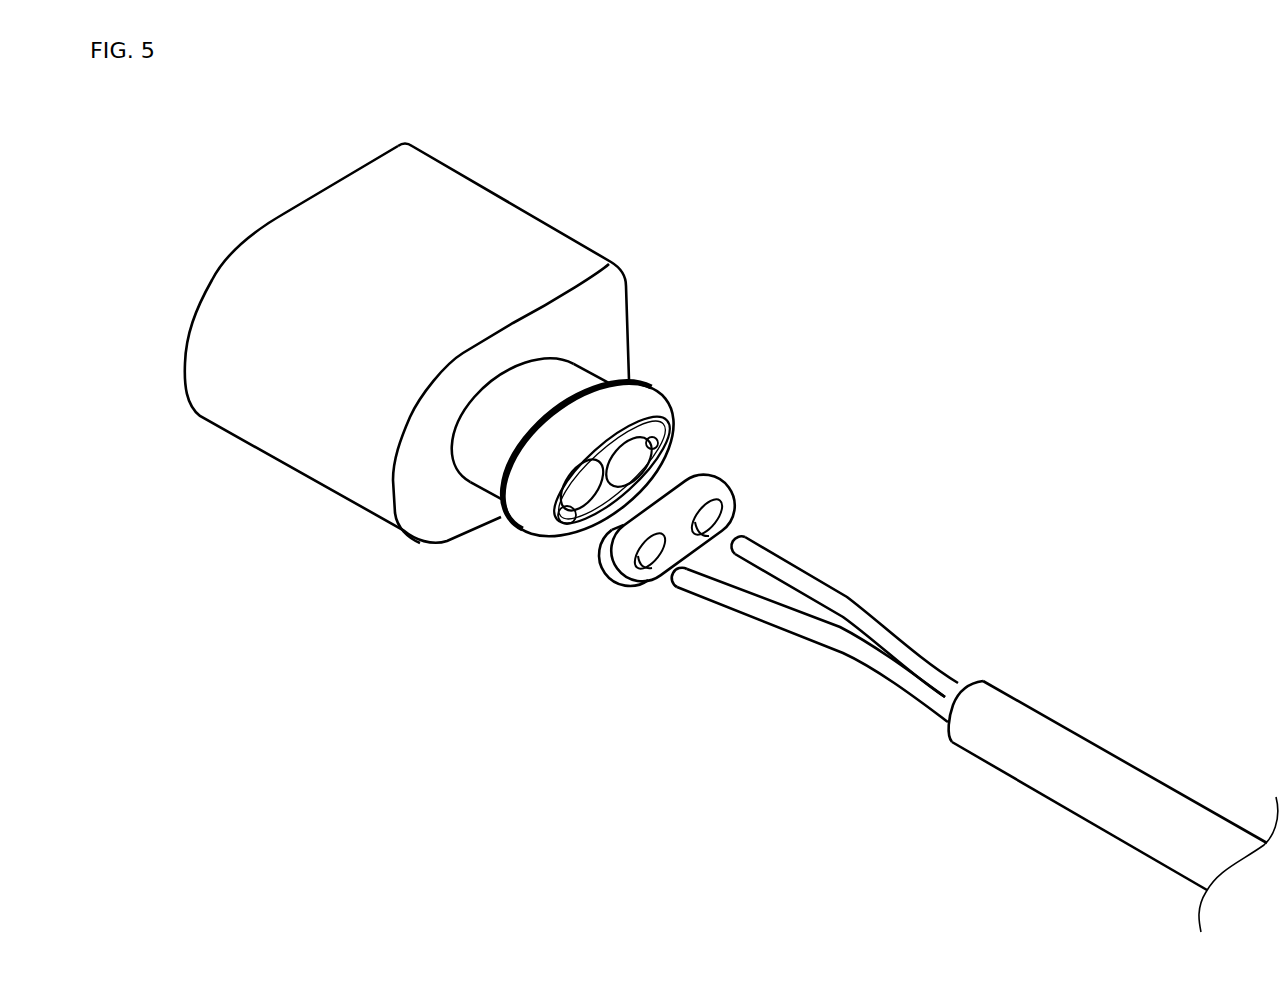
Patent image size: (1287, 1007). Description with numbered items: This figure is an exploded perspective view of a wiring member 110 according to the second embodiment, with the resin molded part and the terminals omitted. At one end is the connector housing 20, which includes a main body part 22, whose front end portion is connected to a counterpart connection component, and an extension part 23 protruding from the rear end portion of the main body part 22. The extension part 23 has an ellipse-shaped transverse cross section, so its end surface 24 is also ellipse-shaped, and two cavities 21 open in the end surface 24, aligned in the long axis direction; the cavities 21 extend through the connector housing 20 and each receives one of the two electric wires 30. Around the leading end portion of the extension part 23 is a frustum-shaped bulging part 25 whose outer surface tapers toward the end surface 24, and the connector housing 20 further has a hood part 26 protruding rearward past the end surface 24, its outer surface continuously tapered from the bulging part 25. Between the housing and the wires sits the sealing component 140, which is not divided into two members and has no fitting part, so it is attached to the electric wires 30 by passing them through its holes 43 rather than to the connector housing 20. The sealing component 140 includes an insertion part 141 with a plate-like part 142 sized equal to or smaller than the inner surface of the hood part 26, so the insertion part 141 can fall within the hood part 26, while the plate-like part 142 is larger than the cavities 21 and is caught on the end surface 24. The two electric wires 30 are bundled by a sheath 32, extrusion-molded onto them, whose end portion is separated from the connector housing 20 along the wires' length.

The wiring member 110 is at (780, 183).
The connector housing 20 is at (462, 162).
The main body part 22 is at (488, 212).
The extension part 23 is at (558, 384).
The bulging part 25 is at (630, 397).
The hood part 26 is at (650, 474).
The end surface 24 is at (600, 497).
The cavities 21 is at (660, 447).
The sealing component 140 is at (718, 480).
The insertion part 141 is at (678, 659).
The plate-like part 142 is at (620, 580).
The holes 43 is at (701, 528).
The electric wires 30 is at (842, 601).
The sheath 32 is at (1097, 812).